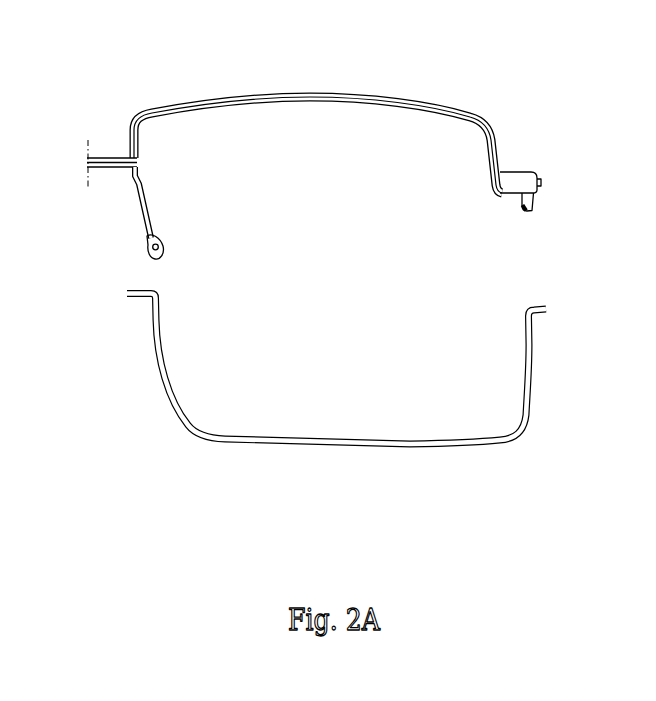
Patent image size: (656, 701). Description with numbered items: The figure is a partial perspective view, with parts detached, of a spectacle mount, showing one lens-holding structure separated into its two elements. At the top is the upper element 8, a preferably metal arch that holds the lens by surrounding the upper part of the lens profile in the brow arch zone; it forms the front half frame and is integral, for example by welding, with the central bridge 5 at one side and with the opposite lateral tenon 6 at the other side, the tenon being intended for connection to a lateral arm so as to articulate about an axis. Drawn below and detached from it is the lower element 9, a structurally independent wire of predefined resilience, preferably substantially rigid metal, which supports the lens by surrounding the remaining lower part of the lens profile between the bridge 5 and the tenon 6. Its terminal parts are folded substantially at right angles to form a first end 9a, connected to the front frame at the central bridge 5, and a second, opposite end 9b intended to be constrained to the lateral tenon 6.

The central bridge 5 is at (112, 157).
The lateral tenon 6 is at (523, 177).
The upper element 8 is at (268, 93).
The lower element 9 is at (507, 445).
The first end 9a is at (133, 297).
The second end 9b is at (540, 315).